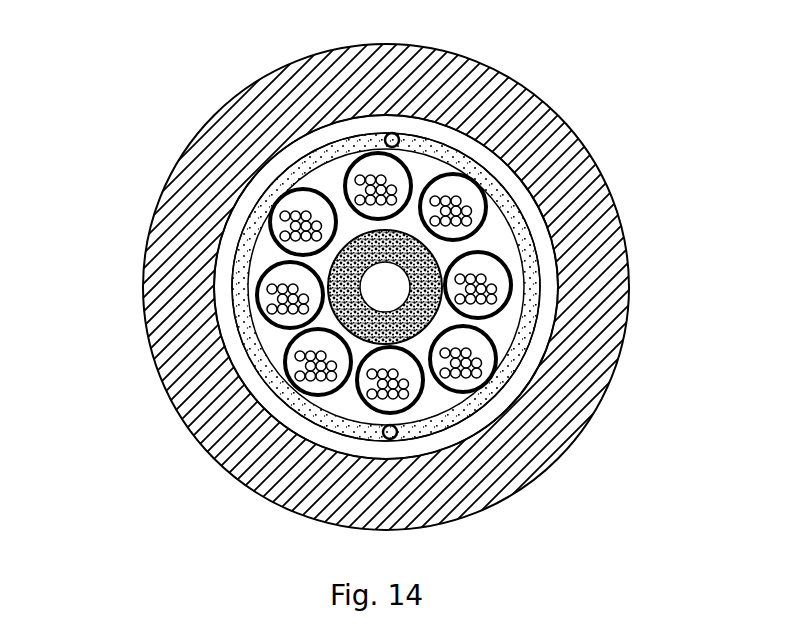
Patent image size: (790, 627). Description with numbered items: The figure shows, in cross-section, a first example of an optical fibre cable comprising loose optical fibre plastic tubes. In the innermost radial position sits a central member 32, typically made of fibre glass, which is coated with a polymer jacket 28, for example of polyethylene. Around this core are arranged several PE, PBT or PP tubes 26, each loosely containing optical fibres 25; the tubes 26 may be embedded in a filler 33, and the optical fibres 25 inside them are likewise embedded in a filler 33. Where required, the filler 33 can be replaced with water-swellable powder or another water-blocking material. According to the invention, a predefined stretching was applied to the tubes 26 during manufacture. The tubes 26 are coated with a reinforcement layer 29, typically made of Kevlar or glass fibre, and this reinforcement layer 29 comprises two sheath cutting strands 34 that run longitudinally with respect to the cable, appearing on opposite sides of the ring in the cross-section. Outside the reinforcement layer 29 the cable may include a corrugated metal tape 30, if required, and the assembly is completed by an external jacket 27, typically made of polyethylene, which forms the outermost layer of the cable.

The external jacket 27 is at (247, 83).
The tubes 26 is at (237, 220).
The corrugated metal tape 30 is at (242, 203).
The reinforcement layer 29 is at (527, 333).
The sheath cutting strands 34 is at (393, 133).
The polymer jacket 28 is at (430, 320).
The central member 32 is at (380, 298).
The filler 33 is at (275, 342).
The optical fibres 25 is at (490, 263).